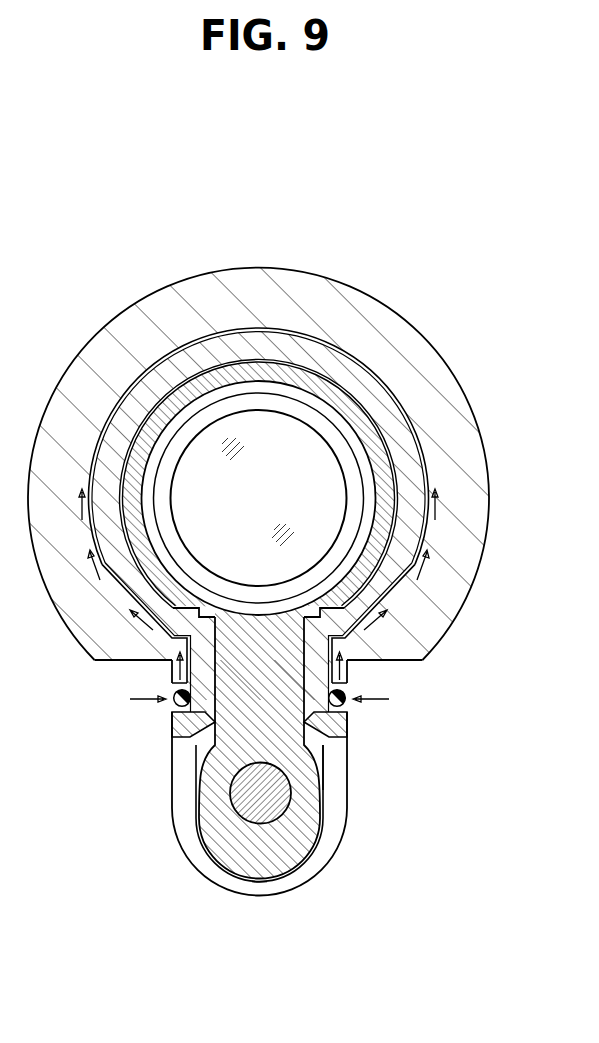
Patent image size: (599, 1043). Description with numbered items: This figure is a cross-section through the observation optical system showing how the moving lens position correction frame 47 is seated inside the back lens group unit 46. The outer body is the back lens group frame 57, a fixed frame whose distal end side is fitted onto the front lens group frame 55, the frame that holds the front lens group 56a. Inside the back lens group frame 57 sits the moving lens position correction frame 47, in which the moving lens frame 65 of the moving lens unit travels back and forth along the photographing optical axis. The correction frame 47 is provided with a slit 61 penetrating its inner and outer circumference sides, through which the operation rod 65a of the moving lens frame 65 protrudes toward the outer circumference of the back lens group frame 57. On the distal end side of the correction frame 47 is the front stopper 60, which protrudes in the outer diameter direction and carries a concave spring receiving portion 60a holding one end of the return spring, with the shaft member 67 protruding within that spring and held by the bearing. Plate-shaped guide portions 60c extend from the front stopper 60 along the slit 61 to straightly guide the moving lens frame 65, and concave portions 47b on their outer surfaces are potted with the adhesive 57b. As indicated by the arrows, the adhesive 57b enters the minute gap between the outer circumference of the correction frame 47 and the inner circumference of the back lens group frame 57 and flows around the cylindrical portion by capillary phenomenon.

The back lens group unit 46 is at (257, 250).
The moving lens position correction frame 47 is at (380, 393).
The concave portions 47b is at (173, 670).
The front lens group frame 55 is at (205, 448).
The front lens group 56a is at (140, 370).
The back lens group frame 57 is at (355, 290).
The adhesive 57b is at (175, 706).
The front stopper 60 is at (178, 847).
The spring receiving portion 60a is at (321, 787).
The guide portions 60c is at (172, 727).
The slit 61 is at (333, 732).
The moving lens frame 65 is at (427, 473).
The operation rod 65a is at (258, 880).
The shaft member 67 is at (272, 823).